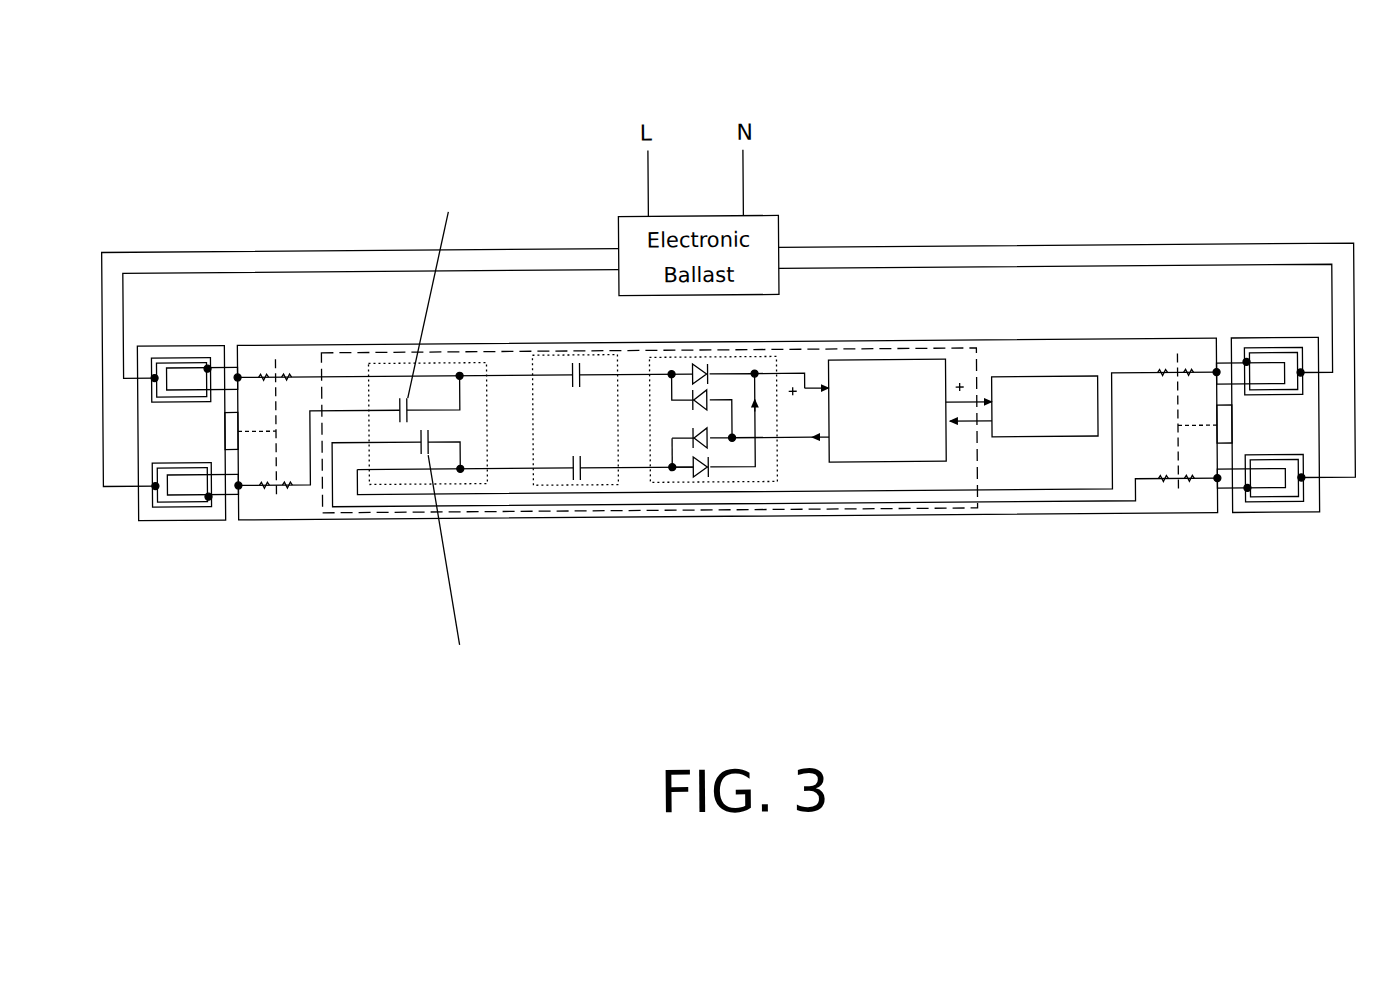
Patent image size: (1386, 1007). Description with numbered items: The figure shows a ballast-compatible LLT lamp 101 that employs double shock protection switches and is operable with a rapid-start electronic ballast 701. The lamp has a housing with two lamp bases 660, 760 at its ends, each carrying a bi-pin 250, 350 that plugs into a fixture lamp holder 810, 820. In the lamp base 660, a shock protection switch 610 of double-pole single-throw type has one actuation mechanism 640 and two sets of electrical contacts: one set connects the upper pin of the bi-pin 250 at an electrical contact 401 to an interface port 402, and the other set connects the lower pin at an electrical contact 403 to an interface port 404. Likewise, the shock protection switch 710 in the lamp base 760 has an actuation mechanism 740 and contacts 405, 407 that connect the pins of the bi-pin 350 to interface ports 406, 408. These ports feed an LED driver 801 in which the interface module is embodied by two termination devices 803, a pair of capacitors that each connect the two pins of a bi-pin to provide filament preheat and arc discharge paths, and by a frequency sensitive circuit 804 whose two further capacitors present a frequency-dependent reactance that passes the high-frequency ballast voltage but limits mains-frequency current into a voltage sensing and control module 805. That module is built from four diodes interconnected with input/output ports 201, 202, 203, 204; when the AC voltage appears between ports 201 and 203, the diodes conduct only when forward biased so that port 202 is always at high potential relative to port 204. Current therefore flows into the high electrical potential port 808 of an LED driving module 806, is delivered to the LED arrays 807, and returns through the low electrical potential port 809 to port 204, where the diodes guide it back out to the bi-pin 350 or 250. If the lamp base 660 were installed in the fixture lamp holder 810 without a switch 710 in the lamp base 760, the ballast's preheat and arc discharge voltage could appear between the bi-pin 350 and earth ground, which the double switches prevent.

The ballast-compatible LLT lamp 101 is at (957, 341).
The input/output port 201 is at (668, 372).
The input/output port 202 is at (807, 386).
The input/output port 203 is at (672, 470).
The input/output port 204 is at (733, 441).
The bi-pin 250 is at (187, 374).
The bi-pin 350 is at (1272, 372).
The electrical contact 401 is at (238, 372).
The interface port 402 is at (363, 360).
The electrical contact 403 is at (241, 486).
The interface port 404 is at (335, 408).
The electrical contact 405 is at (1221, 374).
The interface port 406 is at (358, 505).
The electrical contact 407 is at (1216, 485).
The interface port 408 is at (383, 494).
The shock protection switch 610 is at (288, 371).
The actuation mechanism 640 is at (226, 450).
The lamp base 660 is at (273, 342).
The electronic ballast 701 is at (757, 372).
The shock protection switch 710 is at (1166, 374).
The actuation mechanism 740 is at (1232, 436).
The lamp base 760 is at (1203, 308).
The LED driver 801 is at (470, 350).
The termination devices 803 is at (471, 483).
The frequency sensitive circuit 804 is at (597, 485).
The voltage sensing and control module 805 is at (705, 472).
The LED driving module 806 is at (881, 361).
The LED arrays 807 is at (1047, 440).
The high electrical potential port 808 is at (820, 389).
The low electrical potential port 809 is at (801, 440).
The fixture lamp holder 810 is at (216, 517).
The fixture lamp holder 820 is at (1250, 517).